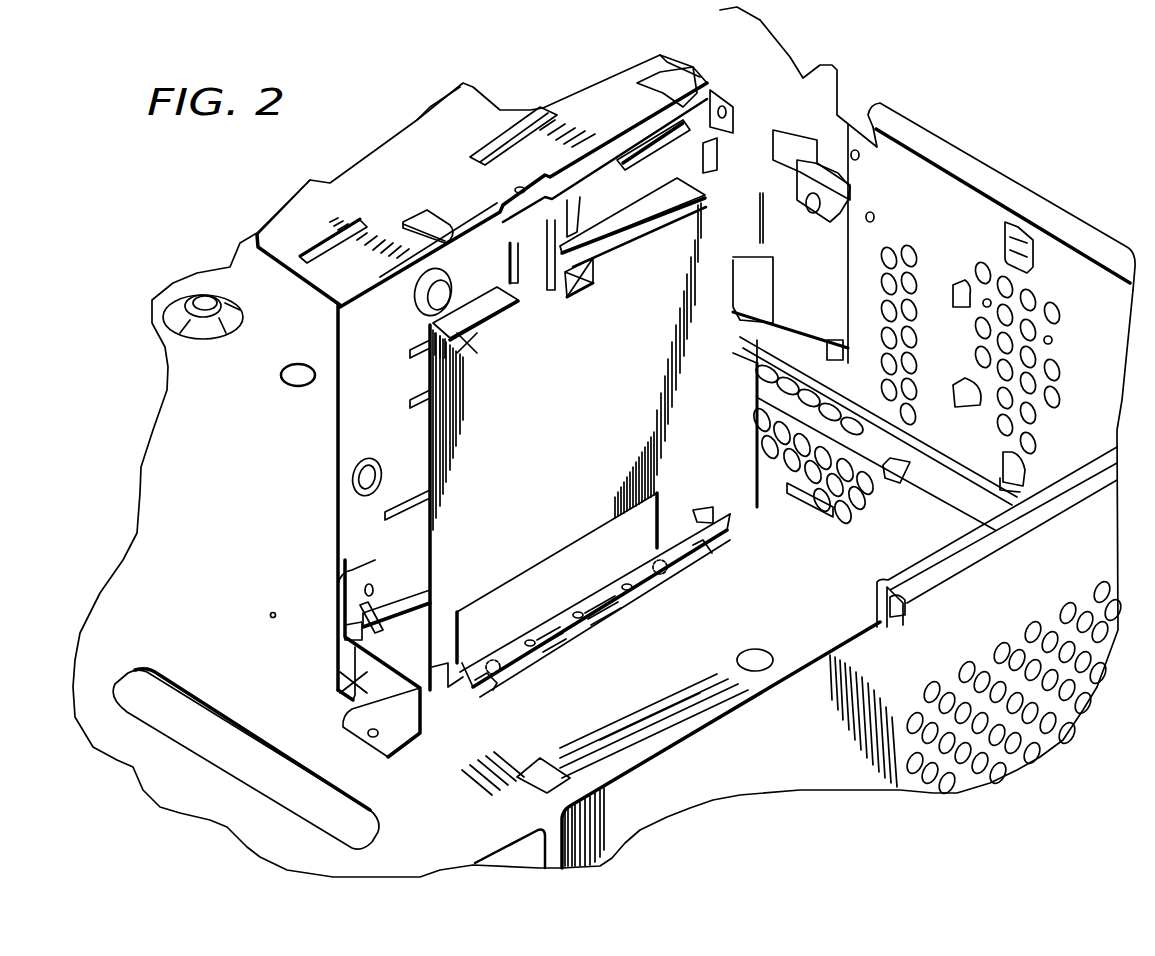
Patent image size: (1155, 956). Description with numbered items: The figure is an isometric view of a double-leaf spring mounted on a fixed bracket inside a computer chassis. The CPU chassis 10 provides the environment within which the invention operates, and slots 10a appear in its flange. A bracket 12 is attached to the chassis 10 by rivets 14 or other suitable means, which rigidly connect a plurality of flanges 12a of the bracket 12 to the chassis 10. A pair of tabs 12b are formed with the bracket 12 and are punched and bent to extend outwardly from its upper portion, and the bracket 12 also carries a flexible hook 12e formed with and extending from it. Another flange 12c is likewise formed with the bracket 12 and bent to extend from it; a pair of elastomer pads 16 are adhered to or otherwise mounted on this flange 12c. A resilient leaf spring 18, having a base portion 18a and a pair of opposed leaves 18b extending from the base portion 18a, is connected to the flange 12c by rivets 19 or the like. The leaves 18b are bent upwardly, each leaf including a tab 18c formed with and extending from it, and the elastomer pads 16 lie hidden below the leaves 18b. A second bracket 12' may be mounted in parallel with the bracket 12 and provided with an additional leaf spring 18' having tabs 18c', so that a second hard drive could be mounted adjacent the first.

The CPU chassis 10 is at (927, 127).
The slots in chassis flange 10a is at (540, 118).
The bracket 12 is at (552, 406).
The bracket 12' is at (308, 406).
The flanges 12a is at (787, 77).
The tabs 12b is at (590, 280).
The flange 12c is at (617, 627).
The flexible hook 12e is at (518, 268).
The rivets 14 is at (735, 100).
The elastomer pads 16 is at (493, 660).
The resilient leaf spring 18 is at (595, 593).
The leaf spring 18' is at (415, 598).
The base portion 18a is at (563, 650).
The leaves 18b is at (487, 680).
The tab 18c is at (588, 598).
The tabs 18c' is at (317, 631).
The rivets 19 is at (627, 585).